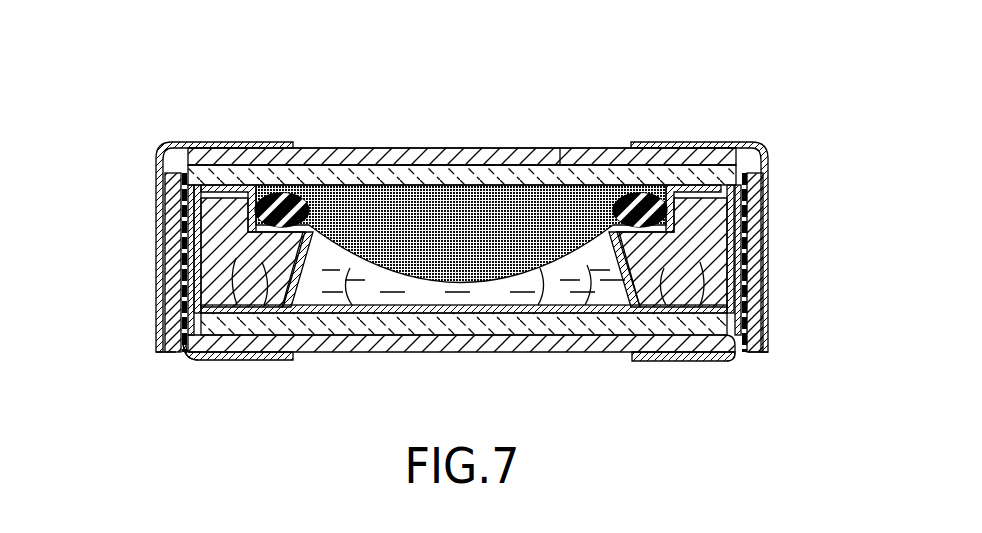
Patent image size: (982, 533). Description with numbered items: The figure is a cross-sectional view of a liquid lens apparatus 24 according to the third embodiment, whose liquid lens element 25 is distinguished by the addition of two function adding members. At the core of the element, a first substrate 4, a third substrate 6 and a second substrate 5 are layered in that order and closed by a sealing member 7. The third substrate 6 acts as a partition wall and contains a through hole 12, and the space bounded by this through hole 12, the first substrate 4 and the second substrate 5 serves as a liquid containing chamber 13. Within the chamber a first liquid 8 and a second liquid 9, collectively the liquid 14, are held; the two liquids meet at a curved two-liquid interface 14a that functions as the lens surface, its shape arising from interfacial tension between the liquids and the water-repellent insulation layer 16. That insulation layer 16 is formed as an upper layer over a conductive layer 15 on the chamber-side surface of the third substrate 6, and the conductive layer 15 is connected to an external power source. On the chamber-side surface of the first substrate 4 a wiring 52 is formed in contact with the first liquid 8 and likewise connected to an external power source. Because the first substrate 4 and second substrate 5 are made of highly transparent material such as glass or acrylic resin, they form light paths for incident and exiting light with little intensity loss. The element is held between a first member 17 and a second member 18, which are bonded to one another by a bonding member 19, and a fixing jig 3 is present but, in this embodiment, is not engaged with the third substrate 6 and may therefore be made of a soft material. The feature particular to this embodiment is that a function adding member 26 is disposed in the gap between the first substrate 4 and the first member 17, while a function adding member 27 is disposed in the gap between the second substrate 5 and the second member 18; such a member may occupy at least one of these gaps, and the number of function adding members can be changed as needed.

The fixing jig 3 is at (464, 262).
The first substrate 4 is at (440, 150).
The second substrate 5 is at (445, 352).
The third substrate 6 is at (243, 360).
The sealing member 7 is at (308, 148).
The first liquid 8 is at (364, 160).
The second liquid 9 is at (332, 168).
The through hole 12 is at (280, 360).
The liquid containing chamber 13 is at (461, 369).
The liquid 14 is at (462, 112).
The two-liquid interface 14a is at (587, 352).
The conductive layer 15 is at (213, 360).
The insulation layer 16 is at (395, 352).
The first member 17 is at (158, 202).
The second member 18 is at (70, 182).
The bonding member 19 is at (167, 237).
The liquid lens apparatus 24 is at (781, 108).
The liquid lens element 25 is at (543, 105).
The function adding member 26 is at (480, 150).
The function adding member 27 is at (475, 352).
The wiring 52 is at (580, 160).